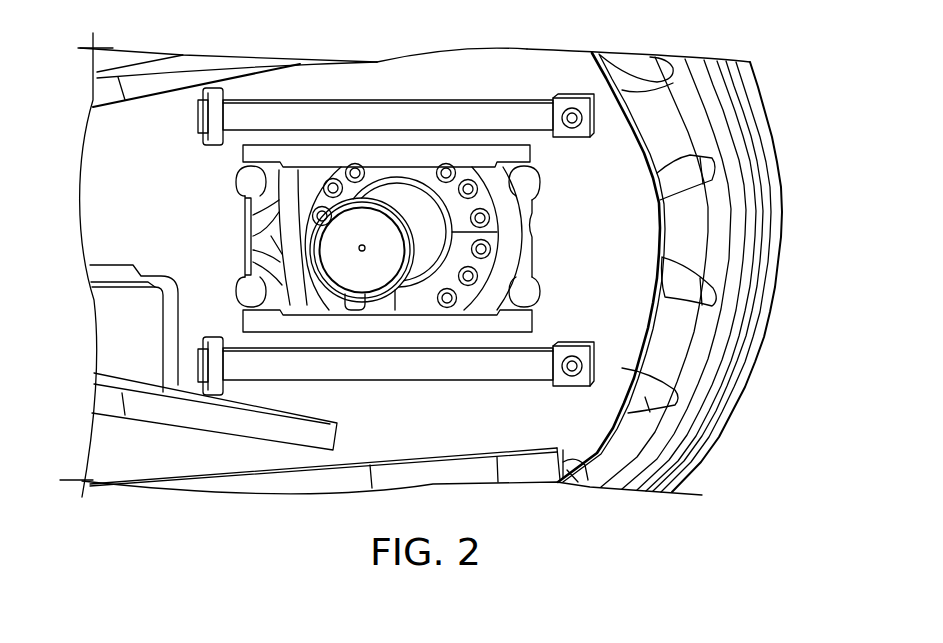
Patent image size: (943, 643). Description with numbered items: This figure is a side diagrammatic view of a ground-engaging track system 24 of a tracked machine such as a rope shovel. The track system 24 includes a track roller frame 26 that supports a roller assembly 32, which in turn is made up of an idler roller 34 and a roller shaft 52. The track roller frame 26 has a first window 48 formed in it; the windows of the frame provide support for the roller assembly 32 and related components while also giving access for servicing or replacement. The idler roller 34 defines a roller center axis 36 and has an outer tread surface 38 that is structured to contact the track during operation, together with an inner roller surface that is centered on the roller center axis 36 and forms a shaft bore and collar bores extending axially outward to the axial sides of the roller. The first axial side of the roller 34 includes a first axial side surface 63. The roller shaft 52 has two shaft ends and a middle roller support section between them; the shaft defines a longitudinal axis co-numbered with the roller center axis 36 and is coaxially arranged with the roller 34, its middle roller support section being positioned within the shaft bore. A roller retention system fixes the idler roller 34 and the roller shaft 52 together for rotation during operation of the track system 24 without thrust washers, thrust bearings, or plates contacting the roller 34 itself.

The ground-engaging track system 24 is at (782, 97).
The track roller frame 26 is at (388, 70).
The roller assembly 32 is at (725, 437).
The idler roller 34 is at (718, 208).
The roller center axis 36 is at (334, 261).
The outer tread surface 38 is at (768, 126).
The first window 48 is at (532, 238).
The roller shaft 52 is at (375, 272).
The first axial side surface 63 is at (500, 195).